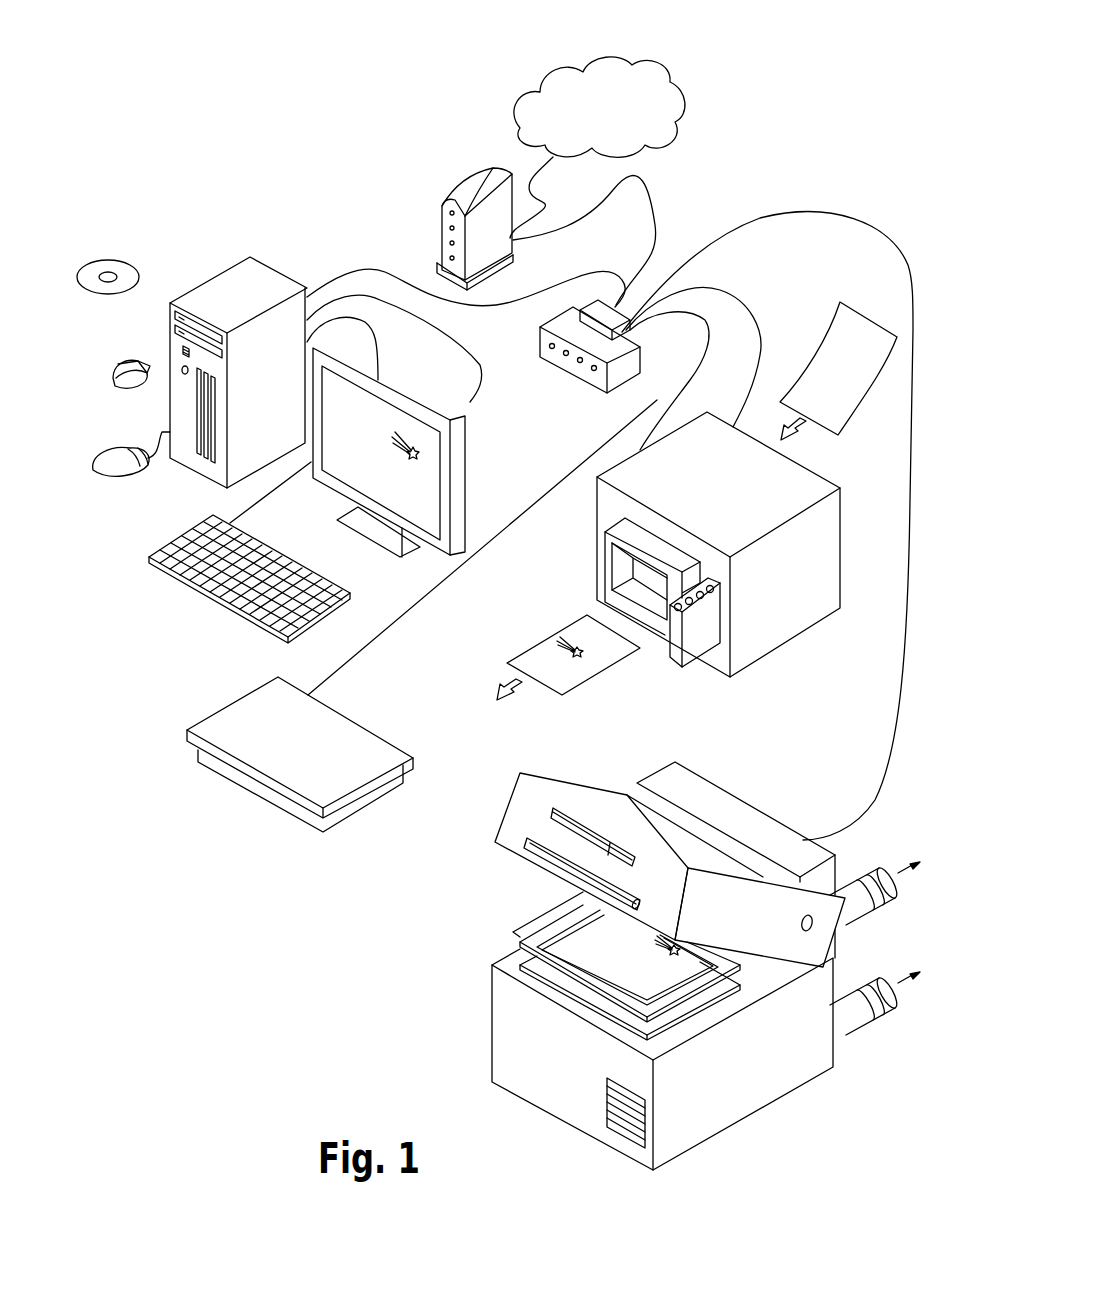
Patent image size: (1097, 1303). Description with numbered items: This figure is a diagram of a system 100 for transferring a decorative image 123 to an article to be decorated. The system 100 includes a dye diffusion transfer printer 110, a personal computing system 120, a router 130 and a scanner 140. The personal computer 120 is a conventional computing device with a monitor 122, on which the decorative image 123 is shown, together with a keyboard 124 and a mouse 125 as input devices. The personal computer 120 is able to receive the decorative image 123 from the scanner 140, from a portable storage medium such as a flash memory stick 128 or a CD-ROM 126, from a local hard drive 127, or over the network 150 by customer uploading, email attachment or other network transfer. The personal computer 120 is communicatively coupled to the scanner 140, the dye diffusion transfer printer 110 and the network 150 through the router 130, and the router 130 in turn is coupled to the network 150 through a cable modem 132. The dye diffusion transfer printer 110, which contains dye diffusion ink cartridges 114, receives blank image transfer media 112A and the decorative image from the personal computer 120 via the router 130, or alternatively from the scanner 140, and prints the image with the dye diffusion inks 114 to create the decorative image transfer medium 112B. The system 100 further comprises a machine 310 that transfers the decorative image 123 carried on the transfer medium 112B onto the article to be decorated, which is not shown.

The system 100 is at (218, 42).
The dye diffusion transfer printer 110 is at (813, 600).
The blank image transfer media 112A is at (823, 345).
The decorative image transfer medium 112B is at (598, 672).
The dye diffusion ink cartridges 114 is at (697, 645).
The personal computing system 120 is at (272, 268).
The monitor 122 is at (467, 463).
The decorative image 123 is at (410, 457).
The keyboard 124 is at (178, 565).
The mouse 125 is at (120, 454).
The CD-ROM 126 is at (113, 260).
The local hard drive 127 is at (177, 317).
The flash memory stick 128 is at (118, 362).
The router 130 is at (544, 358).
The cable modem 132 is at (462, 190).
The scanner 140 is at (232, 778).
The network 150 is at (651, 72).
The machine 310 is at (780, 820).